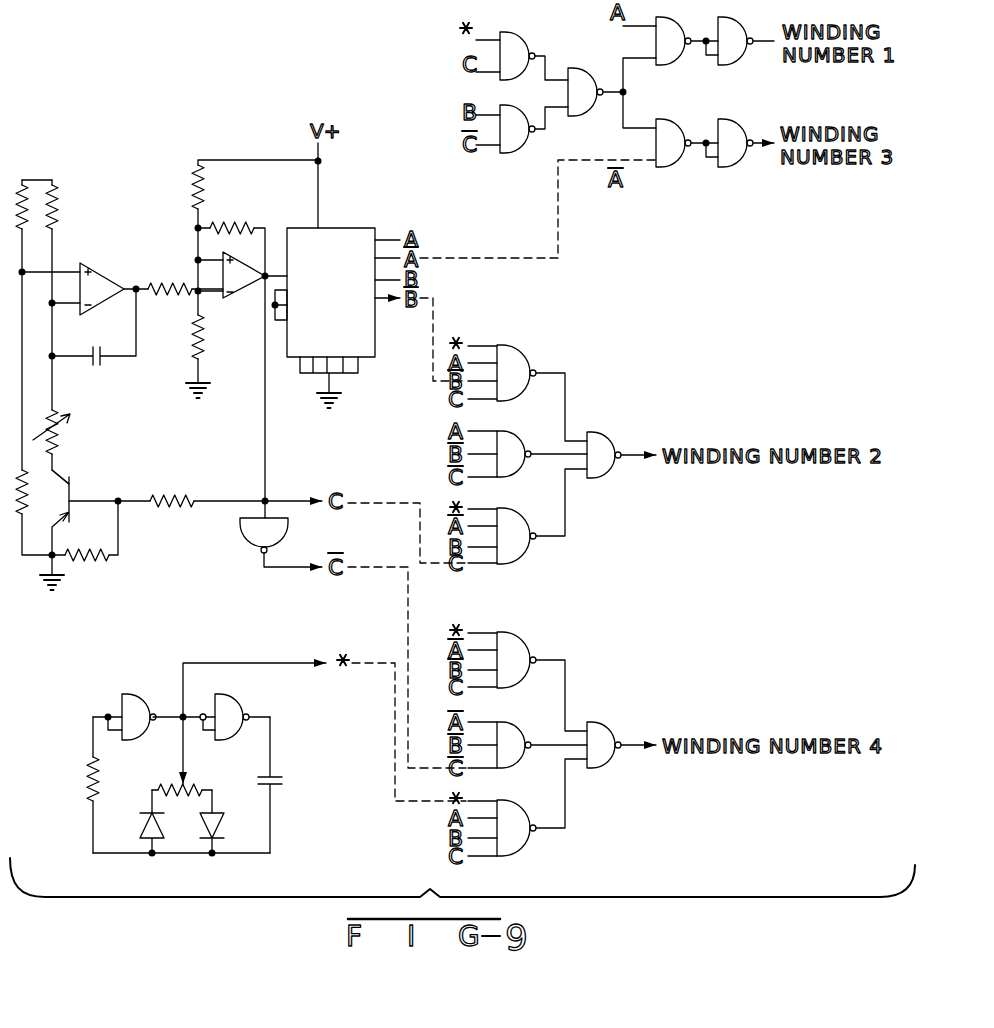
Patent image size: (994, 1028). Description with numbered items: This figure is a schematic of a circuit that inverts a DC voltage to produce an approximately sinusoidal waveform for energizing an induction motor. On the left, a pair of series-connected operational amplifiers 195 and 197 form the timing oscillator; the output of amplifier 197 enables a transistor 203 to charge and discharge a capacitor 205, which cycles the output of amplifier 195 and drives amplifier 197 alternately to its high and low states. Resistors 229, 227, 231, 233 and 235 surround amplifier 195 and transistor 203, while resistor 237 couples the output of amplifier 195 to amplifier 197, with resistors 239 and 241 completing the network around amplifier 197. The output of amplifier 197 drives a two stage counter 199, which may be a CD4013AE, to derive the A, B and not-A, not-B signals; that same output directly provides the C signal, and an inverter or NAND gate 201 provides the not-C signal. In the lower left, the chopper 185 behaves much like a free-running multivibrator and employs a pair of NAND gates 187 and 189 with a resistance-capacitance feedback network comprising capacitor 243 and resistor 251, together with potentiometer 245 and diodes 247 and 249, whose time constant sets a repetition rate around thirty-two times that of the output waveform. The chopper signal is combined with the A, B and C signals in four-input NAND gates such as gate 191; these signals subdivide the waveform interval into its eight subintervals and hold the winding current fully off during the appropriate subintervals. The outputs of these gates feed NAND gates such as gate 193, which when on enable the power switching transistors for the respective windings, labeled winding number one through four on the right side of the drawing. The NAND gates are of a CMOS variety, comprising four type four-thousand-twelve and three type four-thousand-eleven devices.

The chopper 185 is at (212, 749).
The NAND gate 187 is at (120, 706).
The NAND gate 189 is at (229, 699).
The NAND gate 191 is at (527, 640).
The NAND gate 193 is at (605, 724).
The operational amplifier 195 is at (100, 265).
The operational amplifier 197 is at (242, 300).
The two stage counter 199 is at (338, 228).
The inverter or NAND gate 201 is at (243, 540).
The transistor 203 is at (67, 482).
The capacitor 205 is at (100, 366).
The resistor 227 is at (58, 232).
The resistor 229 is at (15, 228).
The resistor 231 is at (65, 435).
The resistor 233 is at (88, 560).
The resistor 235 is at (175, 499).
The resistor 237 is at (158, 286).
The resistor 239 is at (205, 198).
The resistor 241 is at (231, 224).
The capacitor 243 is at (284, 782).
The potentiometer 245 is at (184, 790).
The diode 247 is at (220, 832).
The diode 249 is at (140, 824).
The resistor 251 is at (90, 778).